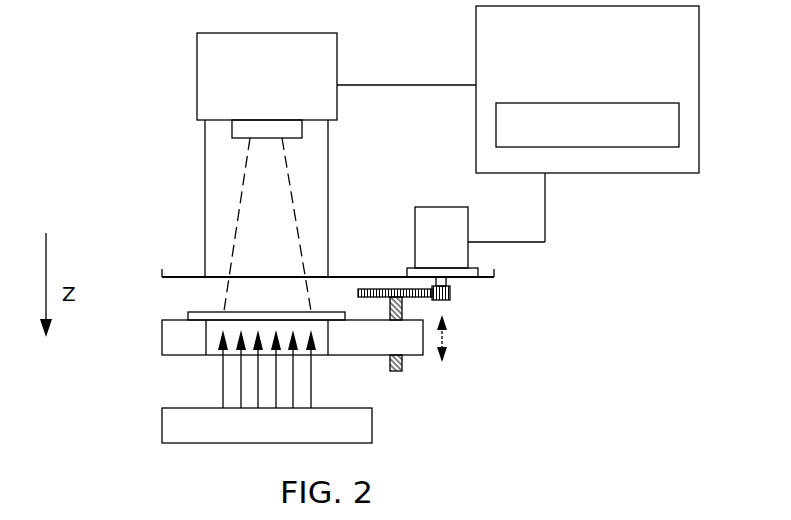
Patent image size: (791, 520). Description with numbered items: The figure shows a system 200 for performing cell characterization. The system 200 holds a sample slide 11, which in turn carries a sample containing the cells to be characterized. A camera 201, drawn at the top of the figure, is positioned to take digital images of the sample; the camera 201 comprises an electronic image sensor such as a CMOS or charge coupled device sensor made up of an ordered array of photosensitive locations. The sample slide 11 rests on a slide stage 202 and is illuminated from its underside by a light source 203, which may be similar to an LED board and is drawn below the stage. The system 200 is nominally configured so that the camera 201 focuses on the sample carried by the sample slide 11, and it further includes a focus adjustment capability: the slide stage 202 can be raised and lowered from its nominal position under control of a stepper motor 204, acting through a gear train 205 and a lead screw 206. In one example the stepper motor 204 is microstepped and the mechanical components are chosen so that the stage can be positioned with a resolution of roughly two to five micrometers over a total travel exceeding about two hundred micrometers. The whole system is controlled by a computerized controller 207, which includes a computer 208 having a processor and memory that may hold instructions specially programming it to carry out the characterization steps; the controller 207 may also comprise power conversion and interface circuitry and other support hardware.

The system 200 is at (133, 66).
The camera 201 is at (199, 115).
The sample slide 11 is at (195, 312).
The slide stage 202 is at (170, 348).
The light source 203 is at (170, 416).
The stepper motor 204 is at (425, 224).
The gear train 205 is at (452, 309).
The lead screw 206 is at (397, 371).
The computerized controller 207 is at (633, 173).
The computer 208 is at (660, 103).